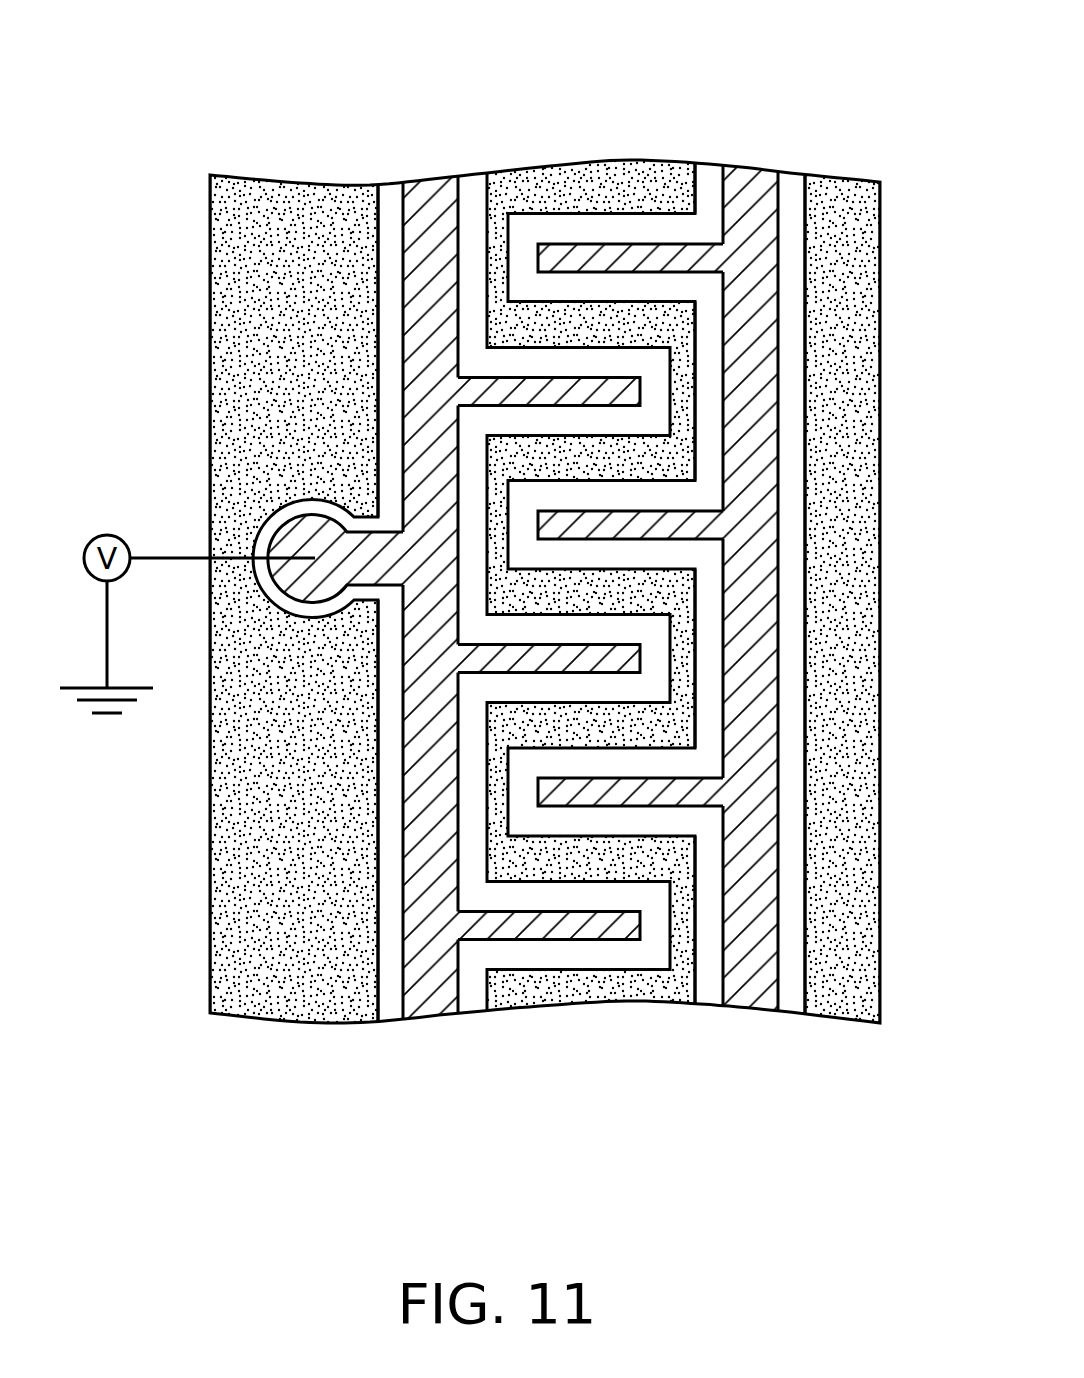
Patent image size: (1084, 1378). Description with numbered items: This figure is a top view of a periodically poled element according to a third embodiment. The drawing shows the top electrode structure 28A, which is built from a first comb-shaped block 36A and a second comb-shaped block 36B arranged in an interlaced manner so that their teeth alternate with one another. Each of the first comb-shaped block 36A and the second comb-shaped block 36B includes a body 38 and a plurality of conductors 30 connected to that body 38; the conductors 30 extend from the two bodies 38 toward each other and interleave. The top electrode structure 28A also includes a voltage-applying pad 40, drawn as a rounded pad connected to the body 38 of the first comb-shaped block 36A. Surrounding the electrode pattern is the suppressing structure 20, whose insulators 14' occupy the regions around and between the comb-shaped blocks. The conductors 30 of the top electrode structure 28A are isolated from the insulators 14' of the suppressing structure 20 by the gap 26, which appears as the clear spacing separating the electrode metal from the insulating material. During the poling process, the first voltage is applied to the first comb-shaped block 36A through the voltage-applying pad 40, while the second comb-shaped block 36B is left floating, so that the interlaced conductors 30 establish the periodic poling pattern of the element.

The suppressing structure 20 is at (545, 607).
The insulators 14' is at (545, 562).
The gap 26 is at (393, 197).
The top electrode structure 28A is at (526, 676).
The first comb-shaped block 36A is at (420, 1093).
The second comb-shaped block 36B is at (685, 1093).
The body 38 is at (440, 993).
The conductors 30 is at (500, 928).
The voltage-applying pad 40 is at (318, 592).